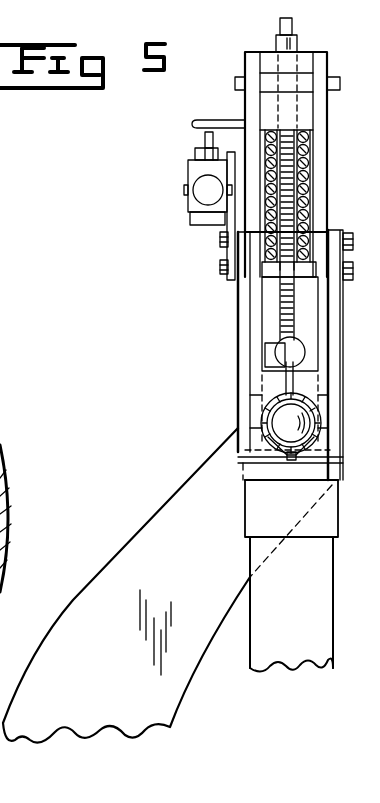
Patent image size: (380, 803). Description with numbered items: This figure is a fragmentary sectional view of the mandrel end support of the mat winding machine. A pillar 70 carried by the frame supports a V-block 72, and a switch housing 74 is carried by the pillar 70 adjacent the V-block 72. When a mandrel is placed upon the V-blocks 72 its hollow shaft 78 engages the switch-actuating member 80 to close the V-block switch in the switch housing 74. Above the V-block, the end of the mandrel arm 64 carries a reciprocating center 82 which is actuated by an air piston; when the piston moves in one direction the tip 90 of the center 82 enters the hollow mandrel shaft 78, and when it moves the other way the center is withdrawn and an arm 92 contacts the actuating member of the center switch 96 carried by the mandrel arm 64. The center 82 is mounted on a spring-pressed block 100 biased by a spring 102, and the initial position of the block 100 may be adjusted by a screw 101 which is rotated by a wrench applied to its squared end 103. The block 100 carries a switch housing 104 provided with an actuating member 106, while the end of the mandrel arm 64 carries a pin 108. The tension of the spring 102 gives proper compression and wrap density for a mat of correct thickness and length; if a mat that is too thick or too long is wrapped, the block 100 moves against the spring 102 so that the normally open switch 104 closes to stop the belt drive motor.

The mandrel arm 64 is at (137, 540).
The pillar 70 is at (320, 625).
The V-block 72 is at (262, 458).
The switch housing 74 is at (250, 530).
The mandrel shaft 78 is at (302, 418).
The switch-actuating member 80 is at (282, 457).
The reciprocating center 82 is at (310, 395).
The center tip 90 is at (278, 418).
The arm 92 is at (288, 382).
The center switch 96 is at (275, 357).
The spring-pressed block 100 is at (315, 335).
The screw 101 is at (300, 172).
The spring 102 is at (310, 208).
The squared end 103 is at (292, 26).
The switch housing 104 is at (195, 215).
The actuating member 106 is at (206, 140).
The pin 108 is at (203, 118).